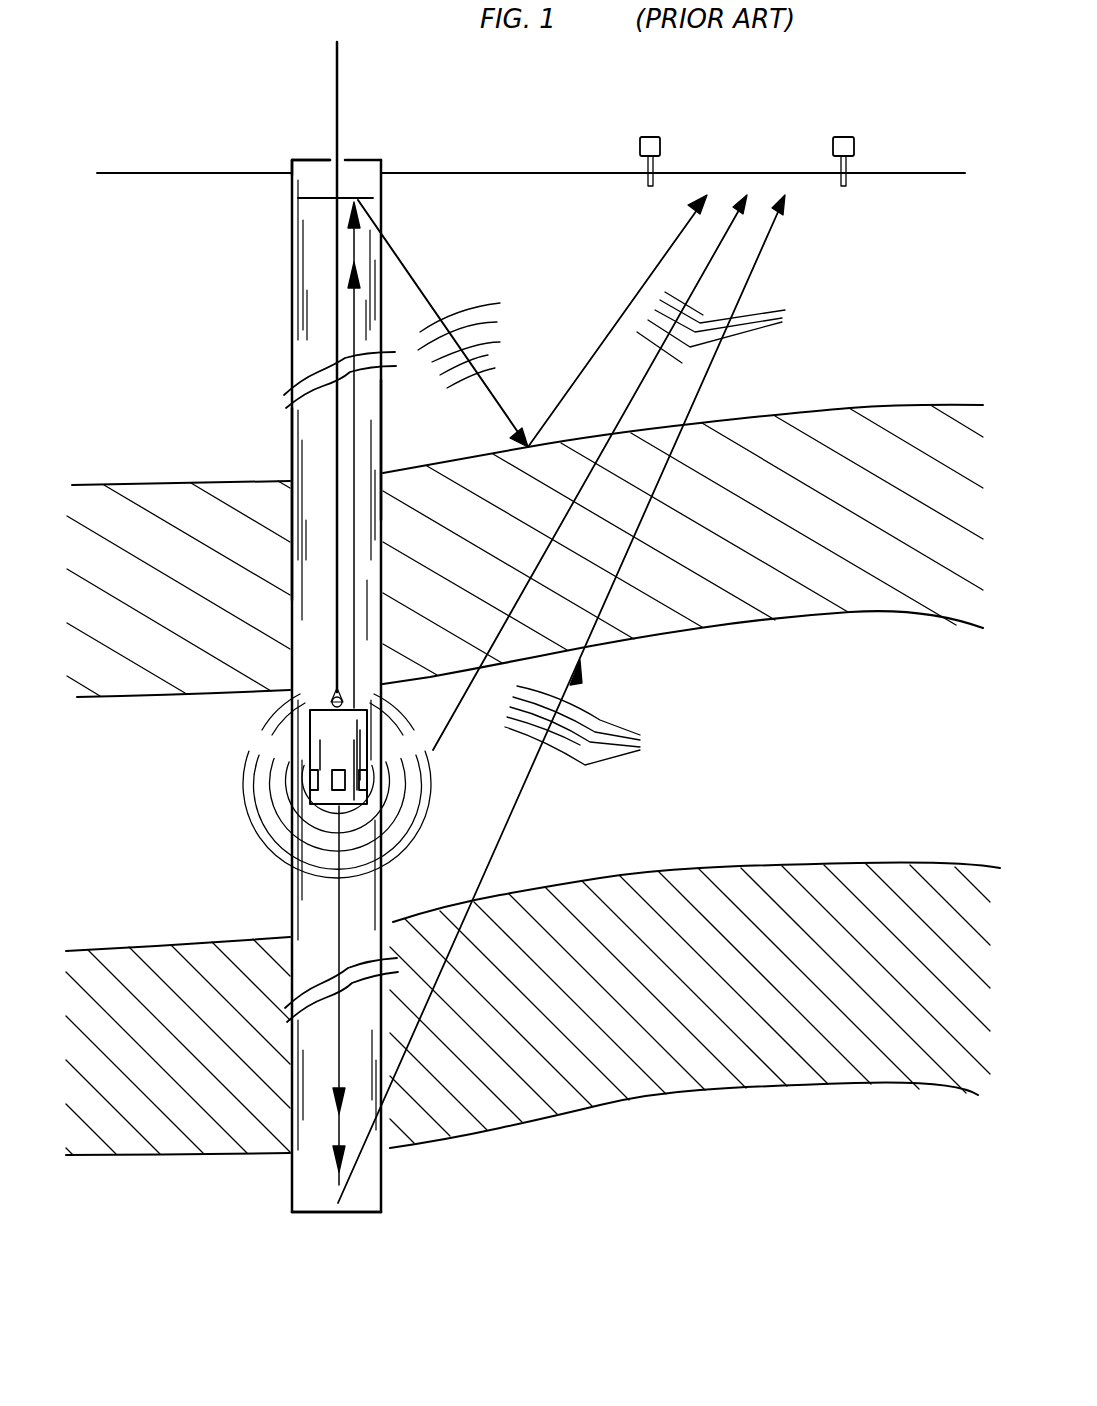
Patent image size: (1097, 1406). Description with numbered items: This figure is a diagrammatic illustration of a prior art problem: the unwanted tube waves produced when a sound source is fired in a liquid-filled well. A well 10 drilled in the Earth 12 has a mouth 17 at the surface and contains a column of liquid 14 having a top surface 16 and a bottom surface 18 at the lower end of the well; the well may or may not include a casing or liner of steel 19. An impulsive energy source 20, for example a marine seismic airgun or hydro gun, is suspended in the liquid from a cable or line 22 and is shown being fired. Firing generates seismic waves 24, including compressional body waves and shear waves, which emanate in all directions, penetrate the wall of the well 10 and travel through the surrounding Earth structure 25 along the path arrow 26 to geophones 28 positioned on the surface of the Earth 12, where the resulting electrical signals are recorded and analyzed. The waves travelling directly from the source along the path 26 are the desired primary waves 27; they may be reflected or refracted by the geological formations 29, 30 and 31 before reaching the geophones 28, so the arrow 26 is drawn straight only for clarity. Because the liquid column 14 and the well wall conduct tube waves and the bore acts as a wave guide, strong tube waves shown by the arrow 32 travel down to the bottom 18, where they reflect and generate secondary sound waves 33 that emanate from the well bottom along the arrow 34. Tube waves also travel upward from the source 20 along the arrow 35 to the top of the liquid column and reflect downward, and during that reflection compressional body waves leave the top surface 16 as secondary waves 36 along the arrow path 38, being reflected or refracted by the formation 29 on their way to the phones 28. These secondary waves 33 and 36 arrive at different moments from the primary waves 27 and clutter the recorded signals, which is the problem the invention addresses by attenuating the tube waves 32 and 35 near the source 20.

The well 10 is at (285, 345).
The Earth 12 is at (500, 172).
The column of liquid 14 is at (308, 430).
The top surface of liquid column 16 is at (350, 198).
The mouth of well 17 is at (298, 168).
The bottom surface of liquid column 18 is at (347, 1212).
The casing or liner of steel 19 is at (372, 420).
The impulsive energy source 20 is at (330, 737).
The cable or line 22 is at (340, 102).
The seismic waves 24 is at (405, 792).
The surrounding Earth structure 25 is at (142, 823).
The path arrow 26 is at (700, 283).
The primary waves 27 is at (732, 327).
The geophones 28 is at (662, 148).
The geological formation 29 is at (912, 410).
The geological formation 30 is at (858, 647).
The geological formation 31 is at (850, 865).
The tube waves arrow 32 is at (335, 1145).
The secondary sound waves 33 is at (591, 725).
The arrow 34 is at (760, 266).
The tube waves arrow 35 is at (355, 318).
The secondary waves 36 is at (485, 352).
The arrow path 38 is at (492, 393).